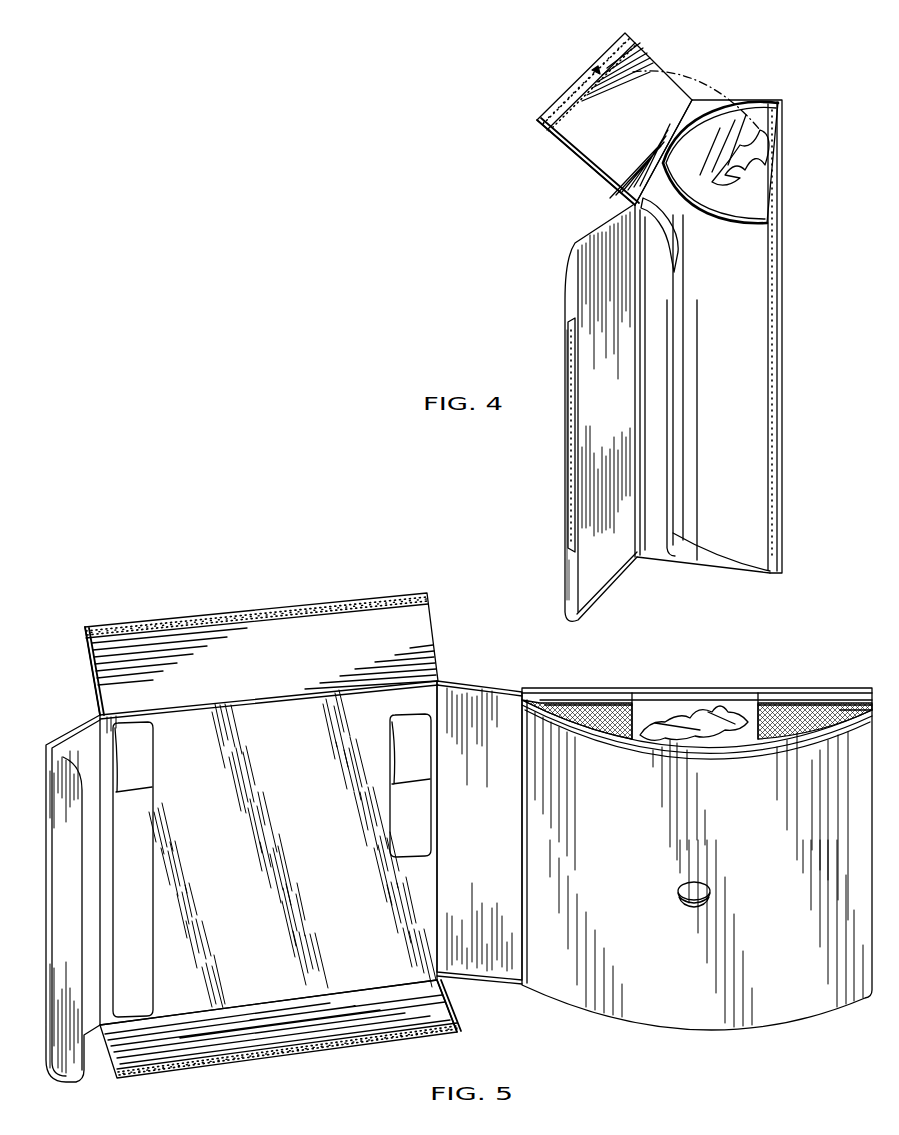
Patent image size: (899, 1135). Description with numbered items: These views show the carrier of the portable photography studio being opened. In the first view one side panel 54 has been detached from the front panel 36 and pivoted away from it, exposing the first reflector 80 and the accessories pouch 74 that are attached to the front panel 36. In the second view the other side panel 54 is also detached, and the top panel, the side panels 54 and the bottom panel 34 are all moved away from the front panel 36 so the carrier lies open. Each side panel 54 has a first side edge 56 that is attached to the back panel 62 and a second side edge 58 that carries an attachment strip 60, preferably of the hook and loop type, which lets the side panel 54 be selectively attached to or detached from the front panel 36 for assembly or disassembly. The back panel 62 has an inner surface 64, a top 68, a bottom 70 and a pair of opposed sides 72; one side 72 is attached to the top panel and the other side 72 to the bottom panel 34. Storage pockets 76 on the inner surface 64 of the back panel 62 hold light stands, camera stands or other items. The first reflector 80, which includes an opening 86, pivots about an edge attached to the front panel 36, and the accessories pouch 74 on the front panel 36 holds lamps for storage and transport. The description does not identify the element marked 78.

In FIG. 5, the bottom panel 34 is at (490, 723).
In FIG. 5, the front panel 36 is at (810, 688).
In FIG. 4, the side panel 54 is at (537, 120).
In FIG. 5, the side panel 54 is at (85, 627).
In FIG. 4, the first side edge 56 is at (680, 127).
In FIG. 5, the first side edge 56 is at (148, 708).
In FIG. 4, the second side edge 58 is at (612, 47).
In FIG. 5, the second side edge 58 is at (167, 623).
In FIG. 4, the attachment strip 60 is at (565, 98).
In FIG. 5, the attachment strip 60 is at (283, 598).
In FIG. 4, the back panel 62 is at (602, 413).
In FIG. 5, the back panel 62 is at (313, 812).
In FIG. 5, the inner surface 64 is at (323, 747).
In FIG. 4, the top 68 is at (571, 459).
In FIG. 5, the top 68 is at (100, 760).
In FIG. 5, the bottom 70 is at (437, 705).
In FIG. 5, the opposed sides 72 is at (250, 703).
In FIG. 4, the accessories pouch 74 is at (750, 167).
In FIG. 5, the accessories pouch 74 is at (694, 723).
In FIG. 5, the storage pocket 76 is at (142, 943).
In FIG. 4, the curved tab 78 is at (659, 377).
In FIG. 4, the first reflector 80 is at (740, 360).
In FIG. 5, the first reflector 80 is at (771, 886).
In FIG. 5, the opening 86 is at (690, 900).